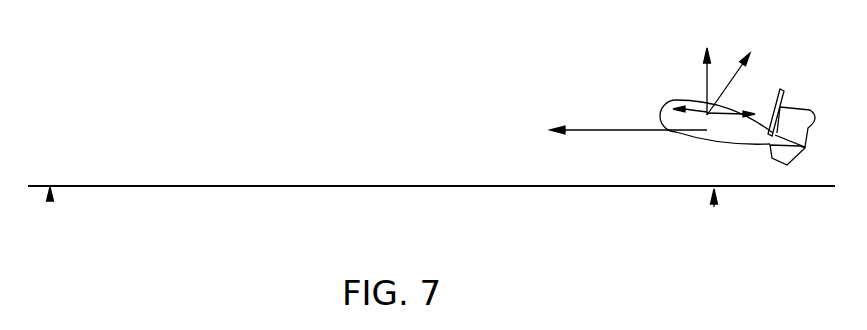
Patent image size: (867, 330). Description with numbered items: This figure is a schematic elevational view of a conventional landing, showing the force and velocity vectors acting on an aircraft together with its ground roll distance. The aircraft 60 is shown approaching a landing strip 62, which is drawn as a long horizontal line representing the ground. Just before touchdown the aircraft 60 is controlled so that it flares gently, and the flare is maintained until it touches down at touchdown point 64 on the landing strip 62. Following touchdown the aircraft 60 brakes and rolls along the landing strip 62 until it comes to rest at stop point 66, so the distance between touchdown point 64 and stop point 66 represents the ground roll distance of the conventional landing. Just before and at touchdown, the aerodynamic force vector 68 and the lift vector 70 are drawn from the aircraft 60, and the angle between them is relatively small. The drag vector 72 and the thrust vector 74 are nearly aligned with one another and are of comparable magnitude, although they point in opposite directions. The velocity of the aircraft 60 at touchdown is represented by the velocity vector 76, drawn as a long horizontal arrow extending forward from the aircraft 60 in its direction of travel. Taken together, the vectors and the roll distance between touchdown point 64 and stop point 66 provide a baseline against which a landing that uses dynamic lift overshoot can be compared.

The aircraft 60 is at (697, 139).
The landing strip 62 is at (292, 185).
The touchdown point 64 is at (715, 207).
The stop point 66 is at (52, 200).
The aerodynamic force vector 68 is at (737, 70).
The lift vector 70 is at (703, 83).
The drag vector 72 is at (725, 112).
The thrust vector 74 is at (690, 102).
The velocity vector 76 is at (578, 130).